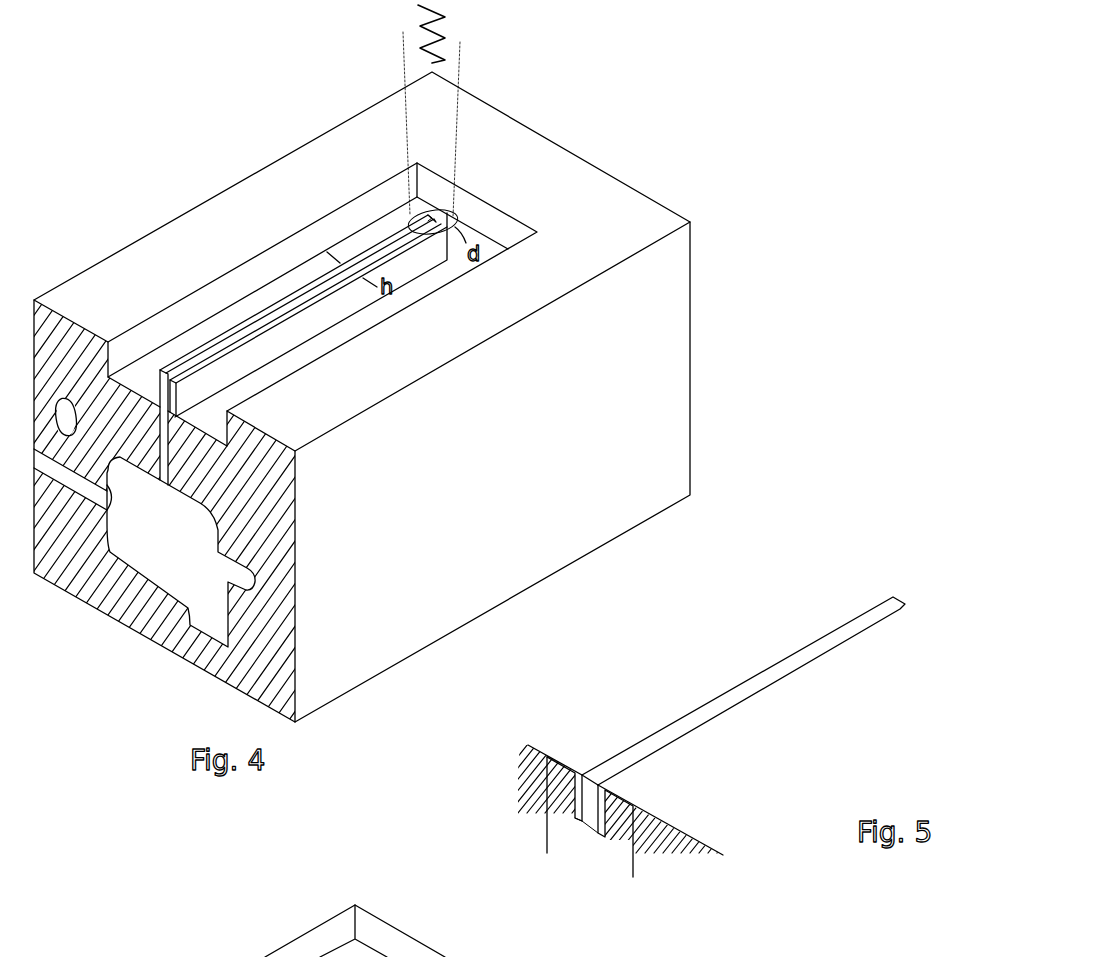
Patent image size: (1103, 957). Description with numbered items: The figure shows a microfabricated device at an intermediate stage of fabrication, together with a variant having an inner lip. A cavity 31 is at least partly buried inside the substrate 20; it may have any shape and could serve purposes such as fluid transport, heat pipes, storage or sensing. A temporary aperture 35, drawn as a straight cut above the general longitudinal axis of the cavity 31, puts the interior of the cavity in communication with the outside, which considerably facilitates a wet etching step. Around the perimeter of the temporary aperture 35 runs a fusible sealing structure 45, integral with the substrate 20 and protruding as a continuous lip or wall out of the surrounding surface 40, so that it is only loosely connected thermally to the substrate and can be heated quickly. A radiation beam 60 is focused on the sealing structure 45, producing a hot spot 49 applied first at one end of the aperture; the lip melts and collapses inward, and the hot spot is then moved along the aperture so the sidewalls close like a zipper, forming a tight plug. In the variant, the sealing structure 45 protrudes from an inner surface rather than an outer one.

In FIG. 4, the substrate 20 is at (75, 594).
In FIG. 4, the cavity 31 is at (218, 608).
In FIG. 4, the temporary aperture 35 is at (225, 345).
In FIG. 5, the temporary aperture 35 is at (655, 742).
In FIG. 4, the surface 40 is at (243, 383).
In FIG. 5, the surface 40 is at (565, 782).
In FIG. 4, the fusible sealing structure 45 is at (263, 310).
In FIG. 5, the fusible sealing structure 45 is at (575, 822).
In FIG. 4, the hot spot 49 is at (450, 215).
In FIG. 4, the radiation beam 60 is at (408, 72).